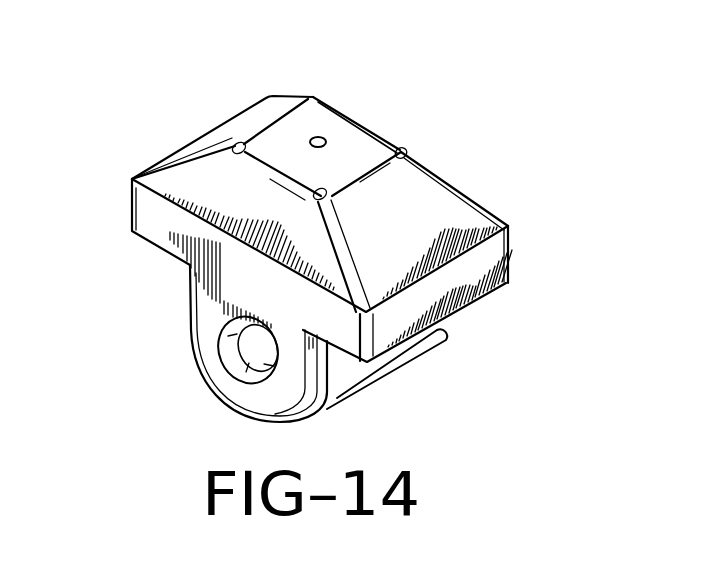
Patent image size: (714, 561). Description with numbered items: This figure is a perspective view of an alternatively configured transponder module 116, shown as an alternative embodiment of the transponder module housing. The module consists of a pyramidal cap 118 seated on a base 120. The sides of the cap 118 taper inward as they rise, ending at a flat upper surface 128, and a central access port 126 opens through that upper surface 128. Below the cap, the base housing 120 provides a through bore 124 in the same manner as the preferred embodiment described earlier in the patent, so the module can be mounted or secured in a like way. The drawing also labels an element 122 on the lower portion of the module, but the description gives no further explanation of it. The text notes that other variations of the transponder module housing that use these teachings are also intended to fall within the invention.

The transponder module 116 is at (186, 120).
The pyramidal cap 118 is at (445, 173).
The base 120 is at (510, 253).
The mounting plate 122 is at (342, 372).
The through bore 124 is at (236, 357).
The central access port 126 is at (321, 137).
The upper surface 128 is at (283, 134).